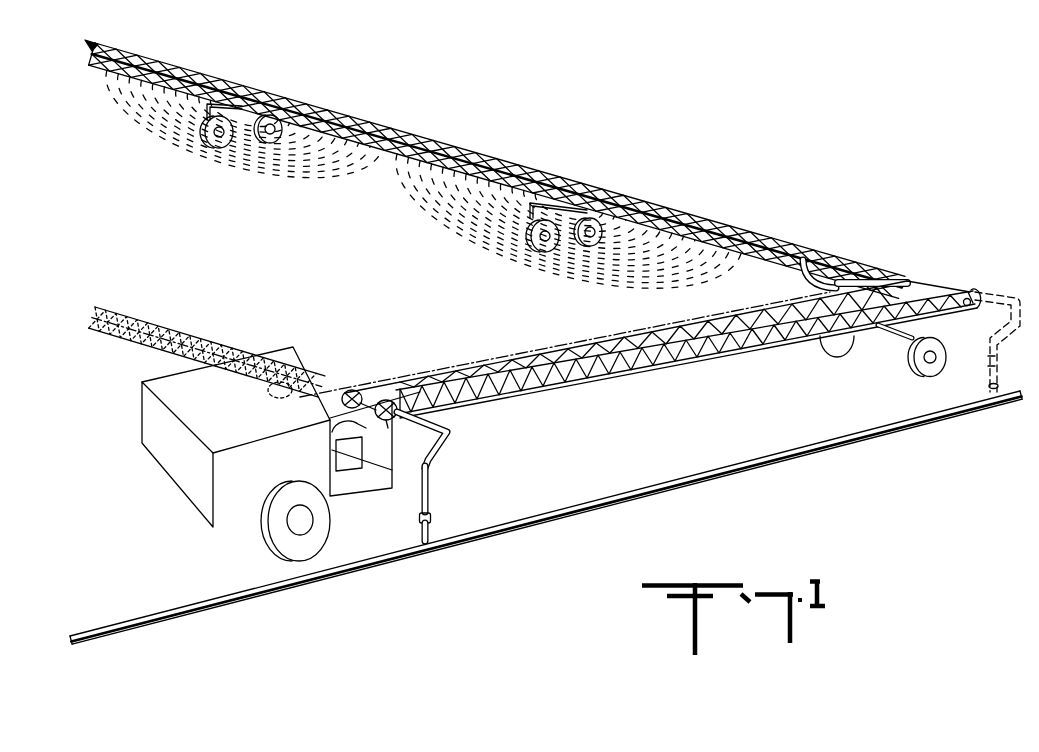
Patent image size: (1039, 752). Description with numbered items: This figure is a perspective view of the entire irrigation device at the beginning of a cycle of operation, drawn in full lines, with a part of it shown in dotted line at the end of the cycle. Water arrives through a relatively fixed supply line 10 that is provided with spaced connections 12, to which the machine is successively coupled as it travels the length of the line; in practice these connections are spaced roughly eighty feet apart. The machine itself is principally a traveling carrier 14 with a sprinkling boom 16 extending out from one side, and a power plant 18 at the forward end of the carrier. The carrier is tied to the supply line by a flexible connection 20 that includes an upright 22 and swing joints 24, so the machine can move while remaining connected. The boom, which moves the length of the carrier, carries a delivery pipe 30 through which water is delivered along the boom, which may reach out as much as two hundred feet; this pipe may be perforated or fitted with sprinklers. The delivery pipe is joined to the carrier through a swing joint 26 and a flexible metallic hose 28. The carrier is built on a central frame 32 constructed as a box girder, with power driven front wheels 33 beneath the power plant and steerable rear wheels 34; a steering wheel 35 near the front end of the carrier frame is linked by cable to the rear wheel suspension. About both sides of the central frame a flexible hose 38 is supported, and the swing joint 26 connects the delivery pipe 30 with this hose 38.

The supply line 10 is at (702, 476).
The connections 12 is at (987, 384).
The traveling carrier 14 is at (640, 357).
The sprinkling boom 16 is at (326, 82).
The power plant 18 is at (191, 460).
The flexible connection 20 is at (972, 330).
The upright 22 is at (432, 483).
The swing joints 24 is at (451, 434).
The swing joint 26 is at (835, 263).
The flexible metallic hose 28 is at (812, 283).
The delivery pipe 30 is at (113, 67).
The central frame 32 is at (431, 378).
The front wheels 33 is at (267, 531).
The rear wheels 34 is at (912, 362).
The steering wheel 35 is at (392, 430).
The flexible hose 38 is at (708, 362).